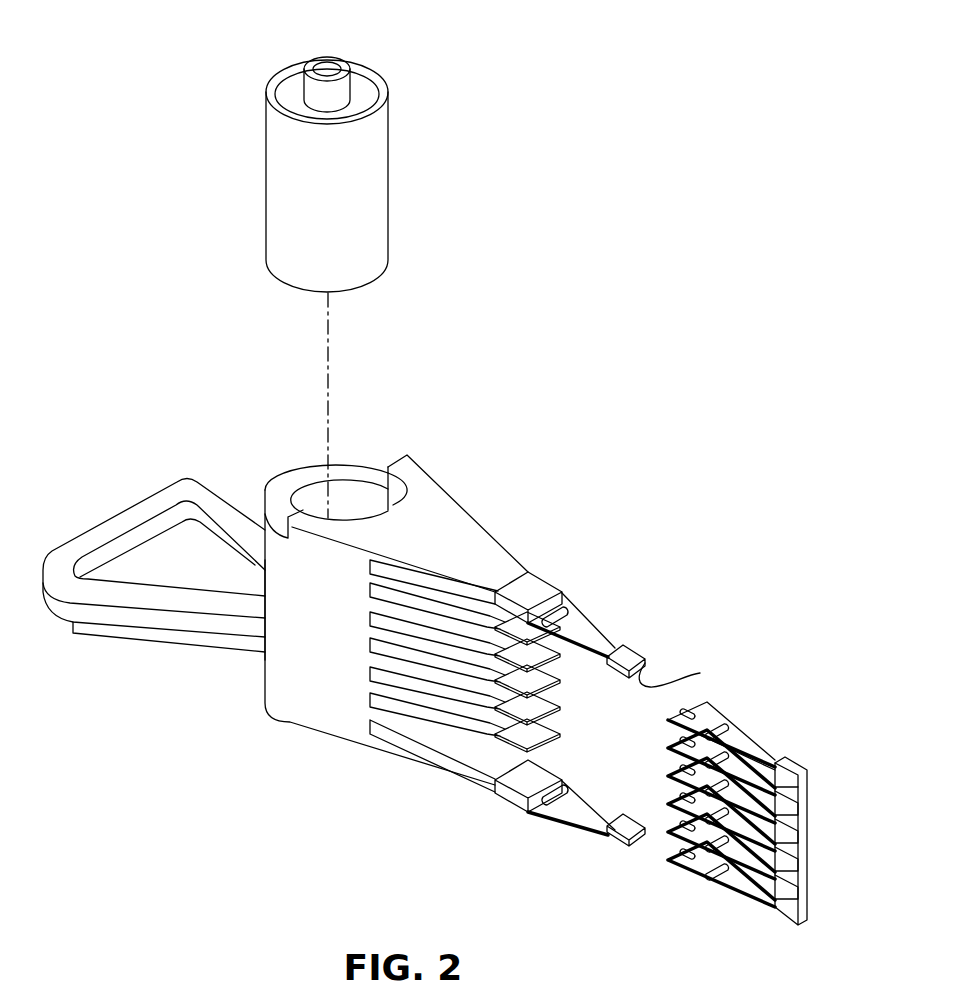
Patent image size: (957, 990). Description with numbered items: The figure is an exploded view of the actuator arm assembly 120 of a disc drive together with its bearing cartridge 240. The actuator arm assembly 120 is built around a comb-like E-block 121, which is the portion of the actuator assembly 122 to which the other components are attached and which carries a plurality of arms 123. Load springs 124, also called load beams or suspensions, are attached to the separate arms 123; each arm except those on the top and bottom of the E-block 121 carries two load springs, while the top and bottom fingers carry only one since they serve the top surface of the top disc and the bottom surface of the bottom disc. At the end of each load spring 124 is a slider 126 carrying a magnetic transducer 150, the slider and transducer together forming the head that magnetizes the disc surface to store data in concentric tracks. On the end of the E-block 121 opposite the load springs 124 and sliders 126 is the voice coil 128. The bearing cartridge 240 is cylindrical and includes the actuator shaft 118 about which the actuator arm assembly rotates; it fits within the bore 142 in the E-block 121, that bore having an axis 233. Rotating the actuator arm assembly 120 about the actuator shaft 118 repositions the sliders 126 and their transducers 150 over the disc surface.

The actuator shaft 118 is at (321, 57).
The bearing cartridge 240 is at (389, 172).
The axis 233 is at (331, 382).
The bore of actuator body 142 is at (397, 484).
The arms 123 is at (468, 536).
The actuator arm assembly 120 is at (313, 717).
The E-block 121 is at (283, 670).
The voice coil 128 is at (103, 512).
The actuator assembly 122 is at (433, 768).
The load springs 124 is at (577, 625).
The magnetic transducer 150 is at (648, 661).
The slider 126 is at (700, 674).